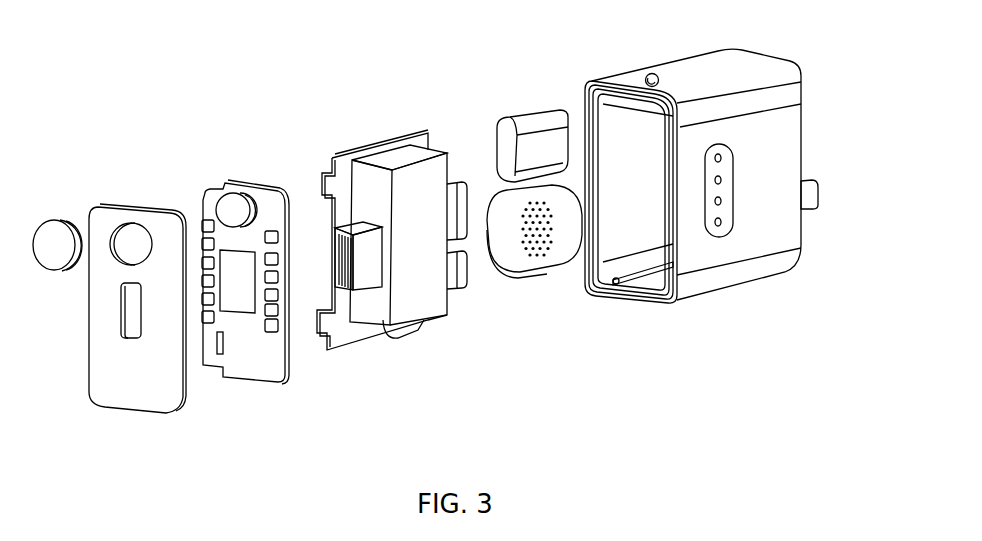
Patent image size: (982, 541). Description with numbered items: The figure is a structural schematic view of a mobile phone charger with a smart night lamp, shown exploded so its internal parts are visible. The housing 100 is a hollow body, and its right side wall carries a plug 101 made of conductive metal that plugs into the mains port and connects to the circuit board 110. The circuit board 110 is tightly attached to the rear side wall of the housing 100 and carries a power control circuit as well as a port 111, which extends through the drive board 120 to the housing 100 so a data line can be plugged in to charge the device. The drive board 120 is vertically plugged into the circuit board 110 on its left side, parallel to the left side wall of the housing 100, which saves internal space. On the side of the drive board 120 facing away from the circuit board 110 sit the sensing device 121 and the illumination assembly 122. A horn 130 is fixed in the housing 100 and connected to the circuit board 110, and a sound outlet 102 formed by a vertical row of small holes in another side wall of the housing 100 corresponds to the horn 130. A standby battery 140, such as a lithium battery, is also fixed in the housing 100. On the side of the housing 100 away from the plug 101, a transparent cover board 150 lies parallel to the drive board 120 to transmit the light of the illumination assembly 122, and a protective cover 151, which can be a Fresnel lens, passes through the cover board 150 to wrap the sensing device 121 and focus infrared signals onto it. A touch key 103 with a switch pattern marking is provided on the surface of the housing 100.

The housing 100 is at (680, 63).
The plug 101 is at (806, 209).
The sound outlet 102 is at (717, 237).
The touch key 103 is at (650, 76).
The circuit board 110 is at (397, 140).
The port 111 is at (353, 288).
The drive board 120 is at (277, 189).
The sensing device 121 is at (223, 189).
The illumination assembly 122 is at (272, 332).
The horn 130 is at (500, 217).
The standby battery 140 is at (532, 112).
The cover board 150 is at (126, 206).
The protective cover 151 is at (45, 272).